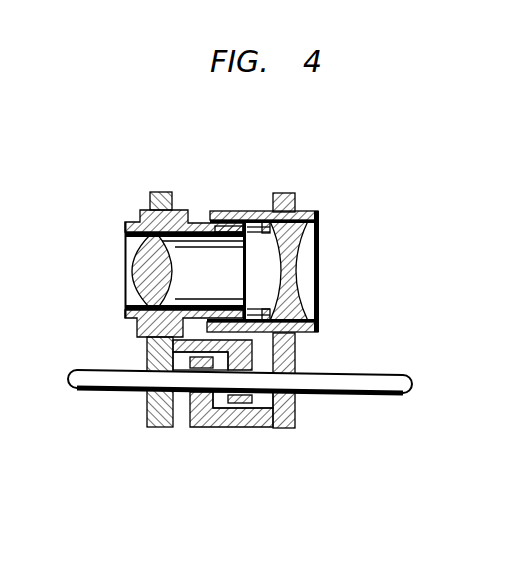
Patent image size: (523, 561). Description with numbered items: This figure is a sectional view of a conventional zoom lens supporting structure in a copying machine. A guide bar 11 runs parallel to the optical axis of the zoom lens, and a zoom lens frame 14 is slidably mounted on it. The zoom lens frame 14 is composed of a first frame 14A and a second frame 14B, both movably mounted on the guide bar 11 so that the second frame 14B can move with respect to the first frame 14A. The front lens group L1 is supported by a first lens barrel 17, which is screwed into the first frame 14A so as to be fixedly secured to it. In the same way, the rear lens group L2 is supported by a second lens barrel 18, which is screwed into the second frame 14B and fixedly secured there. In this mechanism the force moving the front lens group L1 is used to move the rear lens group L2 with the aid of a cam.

The guide bar 11 is at (372, 373).
The zoom lens frame 14 is at (275, 132).
The first frame 14A is at (167, 192).
The second frame 14B is at (280, 193).
The first lens barrel 17 is at (147, 212).
The second lens barrel 18 is at (243, 212).
The front lens group L1 is at (143, 261).
The rear lens group L2 is at (293, 247).